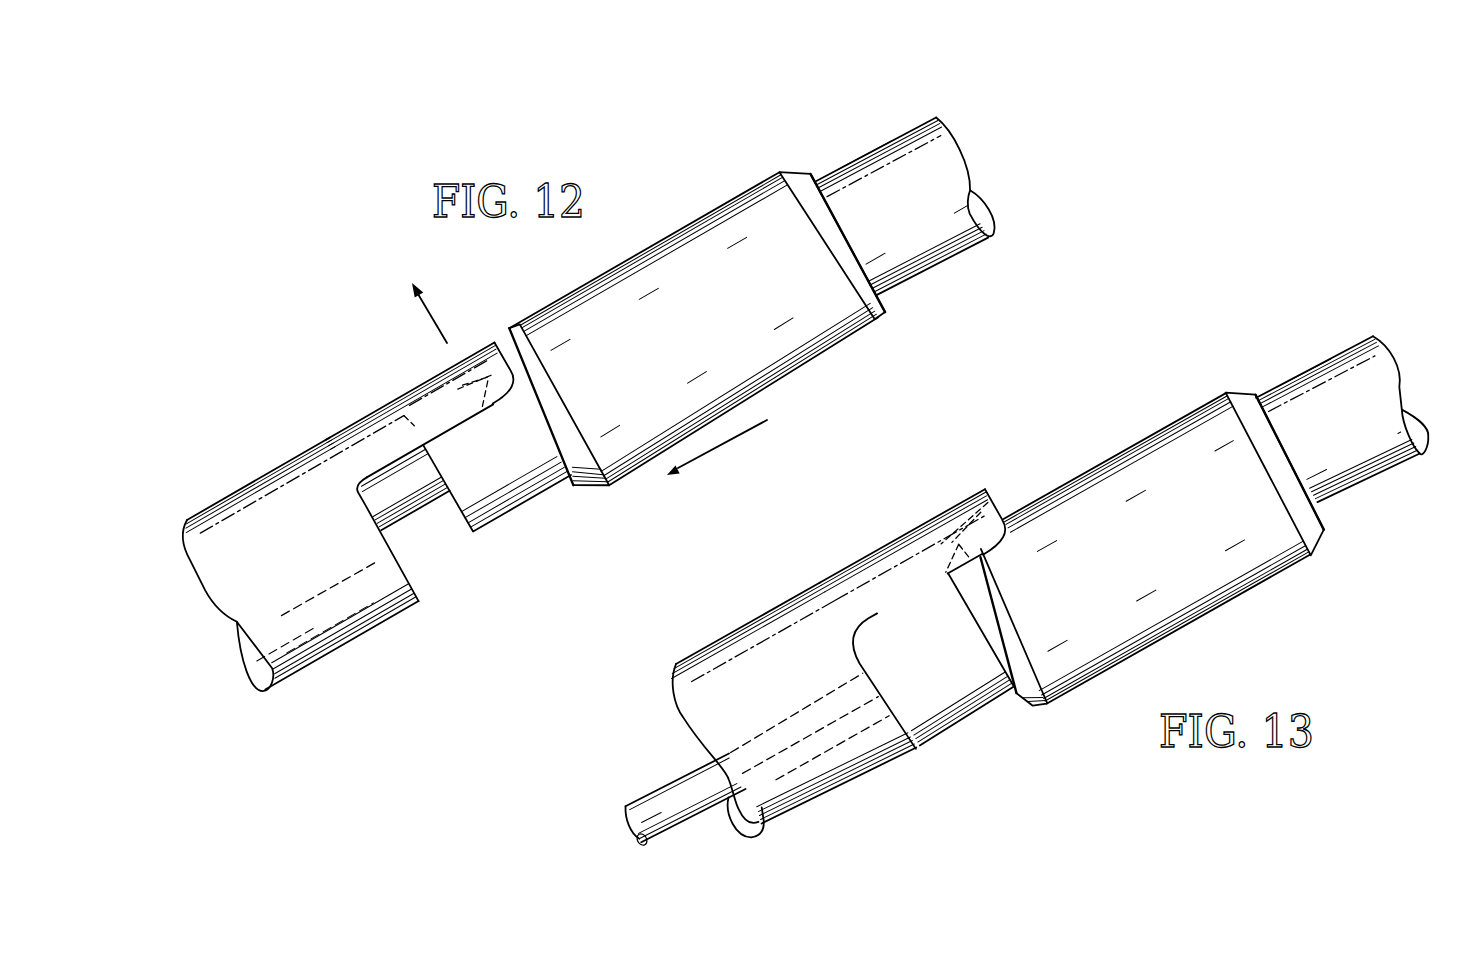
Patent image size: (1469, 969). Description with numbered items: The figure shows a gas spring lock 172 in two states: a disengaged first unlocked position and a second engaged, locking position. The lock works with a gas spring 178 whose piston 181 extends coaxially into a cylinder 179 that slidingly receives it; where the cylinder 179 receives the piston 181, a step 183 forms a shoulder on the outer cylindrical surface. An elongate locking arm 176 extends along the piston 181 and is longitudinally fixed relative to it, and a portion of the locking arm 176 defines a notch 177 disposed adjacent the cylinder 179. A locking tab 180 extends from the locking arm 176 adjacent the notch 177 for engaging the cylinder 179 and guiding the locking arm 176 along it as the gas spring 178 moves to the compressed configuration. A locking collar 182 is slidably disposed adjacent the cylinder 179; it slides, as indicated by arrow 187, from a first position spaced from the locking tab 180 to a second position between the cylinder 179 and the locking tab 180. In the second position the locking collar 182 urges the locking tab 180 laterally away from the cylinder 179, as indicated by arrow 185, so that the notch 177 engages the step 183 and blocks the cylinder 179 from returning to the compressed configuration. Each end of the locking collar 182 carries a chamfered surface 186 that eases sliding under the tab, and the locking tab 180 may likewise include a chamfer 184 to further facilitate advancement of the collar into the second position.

In FIG. 12, the gas spring lock 172 is at (251, 279).
In FIG. 13, the gas spring lock 172 is at (1126, 336).
In FIG. 12, the locking arm 176 is at (315, 674).
In FIG. 13, the locking arm 176 is at (876, 789).
In FIG. 12, the notch 177 is at (423, 590).
In FIG. 13, the notch 177 is at (906, 727).
In FIG. 12, the gas spring 178 is at (873, 132).
In FIG. 13, the gas spring 178 is at (1315, 335).
In FIG. 12, the cylinder 179 is at (907, 132).
In FIG. 13, the cylinder 179 is at (1341, 348).
In FIG. 12, the locking tab 180 is at (392, 398).
In FIG. 13, the locking tab 180 is at (858, 558).
In FIG. 12, the piston 181 is at (422, 512).
In FIG. 13, the piston 181 is at (693, 821).
In FIG. 12, the locking collar 182 is at (732, 196).
In FIG. 13, the locking collar 182 is at (1256, 580).
In FIG. 12, the step 183 is at (457, 517).
In FIG. 13, the step 183 is at (914, 725).
In FIG. 12, the chamfer 184 is at (500, 336).
In FIG. 13, the chamfer 184 is at (996, 498).
In FIG. 12, the arrow 185 is at (430, 324).
In FIG. 12, the chamfered surface 186 is at (885, 308).
In FIG. 13, the chamfered surface 186 is at (1326, 526).
In FIG. 12, the arrow 187 is at (747, 432).